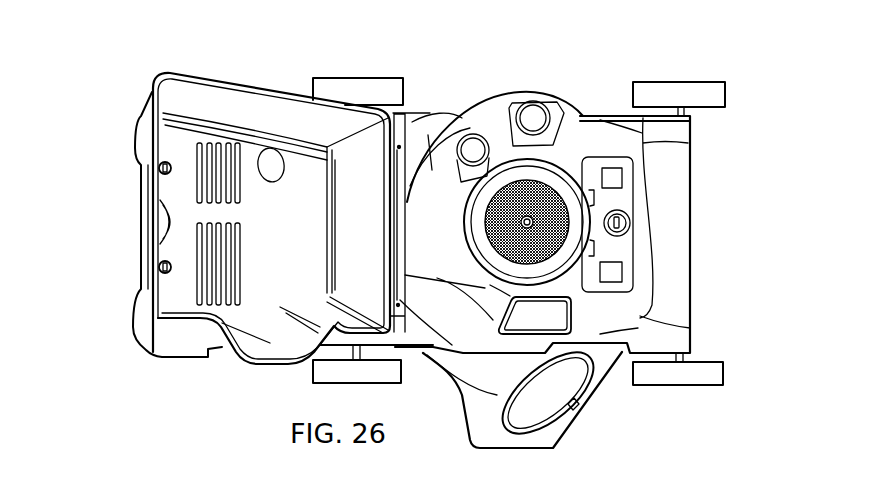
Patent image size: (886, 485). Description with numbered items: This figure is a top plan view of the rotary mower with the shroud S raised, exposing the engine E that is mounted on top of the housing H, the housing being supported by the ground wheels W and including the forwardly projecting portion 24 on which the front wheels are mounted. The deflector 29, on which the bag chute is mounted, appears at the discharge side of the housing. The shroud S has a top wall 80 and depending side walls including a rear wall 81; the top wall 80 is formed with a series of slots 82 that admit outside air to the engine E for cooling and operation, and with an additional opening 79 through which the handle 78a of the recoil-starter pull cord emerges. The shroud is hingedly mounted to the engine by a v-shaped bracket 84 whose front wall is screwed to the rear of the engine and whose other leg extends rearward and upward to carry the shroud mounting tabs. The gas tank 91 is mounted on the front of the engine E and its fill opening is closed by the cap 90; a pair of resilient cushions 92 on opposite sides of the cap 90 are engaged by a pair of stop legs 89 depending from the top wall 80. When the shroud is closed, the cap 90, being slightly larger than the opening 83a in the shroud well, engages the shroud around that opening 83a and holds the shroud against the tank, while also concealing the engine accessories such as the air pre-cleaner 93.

The shroud S is at (242, 72).
The housing H is at (497, 90).
The engine E is at (548, 180).
The ground wheels W is at (684, 78).
The forwardly projecting portion 24 is at (680, 299).
The deflector 29 is at (577, 410).
The handle of the pull cord 78a is at (473, 134).
The additional opening 79 is at (277, 178).
The top wall 80 is at (177, 138).
The rear wall 81 is at (372, 233).
The slots 82 is at (245, 202).
The opening 83a is at (163, 222).
The v-shaped bracket 84 is at (430, 136).
The stop legs 89 is at (160, 267).
The cap 90 is at (632, 224).
The gas tank 91 is at (635, 188).
The resilient cushions 92 is at (623, 273).
The air pre-cleaner 93 is at (503, 313).